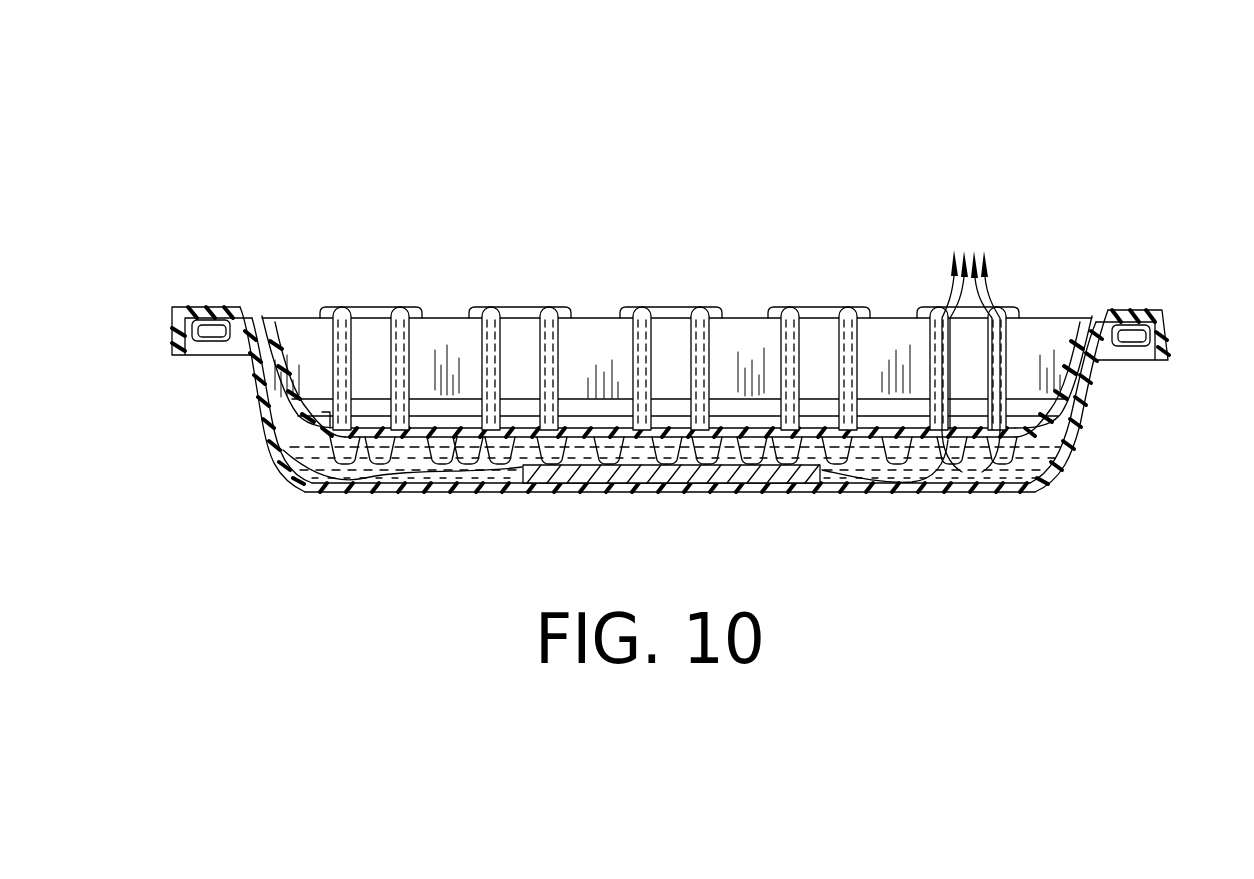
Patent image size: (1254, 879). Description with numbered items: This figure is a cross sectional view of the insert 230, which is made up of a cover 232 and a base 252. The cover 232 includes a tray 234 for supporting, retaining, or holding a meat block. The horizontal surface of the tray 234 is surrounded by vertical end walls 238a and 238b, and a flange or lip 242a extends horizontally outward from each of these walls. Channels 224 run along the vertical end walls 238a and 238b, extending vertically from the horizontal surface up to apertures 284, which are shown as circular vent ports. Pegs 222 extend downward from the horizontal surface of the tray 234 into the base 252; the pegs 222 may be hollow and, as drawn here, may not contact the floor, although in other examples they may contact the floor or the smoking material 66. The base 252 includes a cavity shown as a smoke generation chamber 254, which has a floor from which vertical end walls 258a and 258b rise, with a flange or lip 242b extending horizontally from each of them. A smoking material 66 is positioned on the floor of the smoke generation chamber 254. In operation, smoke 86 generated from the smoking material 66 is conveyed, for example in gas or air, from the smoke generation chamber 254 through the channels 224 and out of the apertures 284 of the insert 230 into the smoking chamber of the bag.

The insert 230 is at (258, 112).
The cover 232 is at (380, 196).
The tray 234 is at (590, 272).
The channels 224 is at (416, 343).
The apertures 284 is at (529, 304).
The smoke 86 is at (994, 266).
The flange or lip 242a is at (178, 305).
The flange or lip 242b is at (224, 326).
The vertical end wall 238a is at (1080, 338).
The vertical end wall 238b is at (264, 333).
The vertical end wall 258a is at (1101, 406).
The vertical end wall 258b is at (243, 406).
The base 252 is at (1101, 476).
The smoke generation chamber 254 is at (1029, 464).
The pegs 222 is at (370, 453).
The smoking material 66 is at (716, 473).